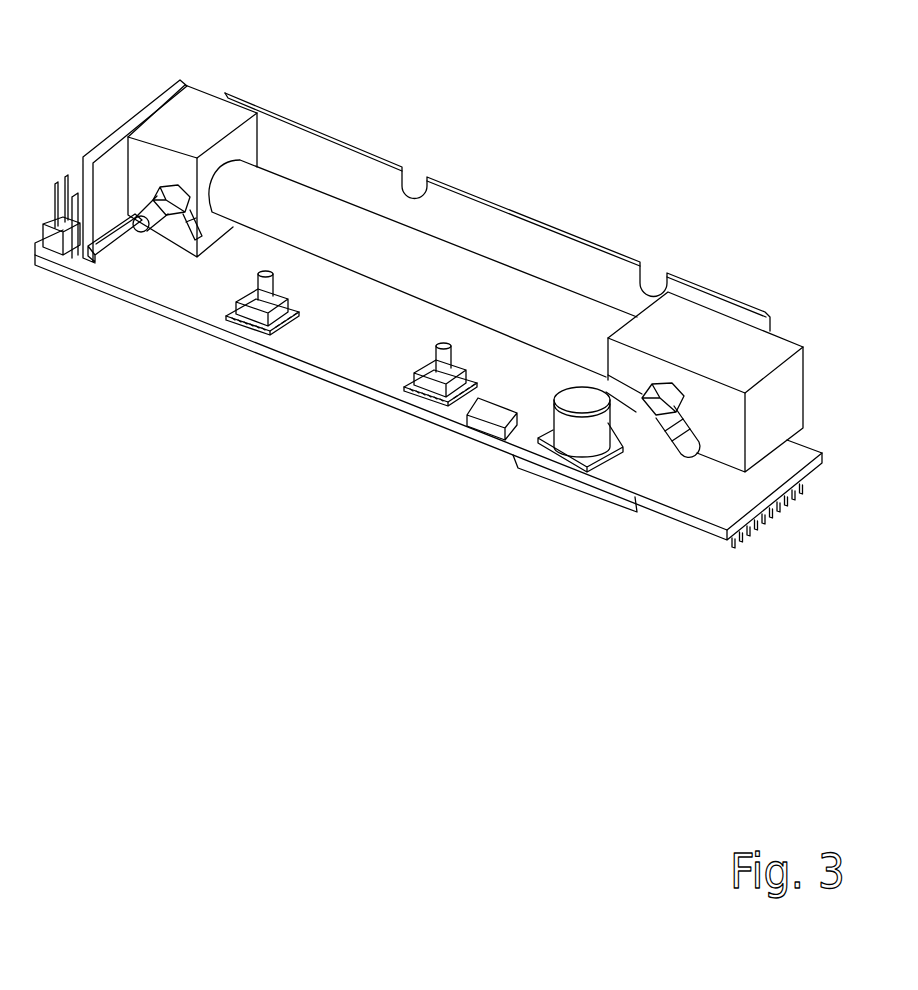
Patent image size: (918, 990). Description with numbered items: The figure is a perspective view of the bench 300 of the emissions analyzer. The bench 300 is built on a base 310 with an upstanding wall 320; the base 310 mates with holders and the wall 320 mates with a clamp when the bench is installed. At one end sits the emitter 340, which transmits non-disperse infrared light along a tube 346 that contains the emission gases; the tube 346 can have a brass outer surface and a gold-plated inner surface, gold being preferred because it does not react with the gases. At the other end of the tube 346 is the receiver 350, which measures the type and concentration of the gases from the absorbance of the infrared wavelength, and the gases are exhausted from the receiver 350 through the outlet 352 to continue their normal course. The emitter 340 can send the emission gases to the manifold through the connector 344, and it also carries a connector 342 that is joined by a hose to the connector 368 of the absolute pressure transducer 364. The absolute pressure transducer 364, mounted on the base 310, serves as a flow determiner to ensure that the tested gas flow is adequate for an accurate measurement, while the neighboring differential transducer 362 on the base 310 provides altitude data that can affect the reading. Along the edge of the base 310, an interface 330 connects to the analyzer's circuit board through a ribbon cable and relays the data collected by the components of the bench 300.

The bench 300 is at (580, 152).
The base 310 is at (340, 347).
The wall 320 is at (482, 217).
The interface 330 is at (767, 520).
The emitter 340 is at (737, 345).
The connector 342 is at (682, 452).
The connector 344 is at (608, 386).
The tube 346 is at (308, 210).
The receiver 350 is at (207, 107).
The outlet 352 is at (182, 237).
The differential transducer 362 is at (253, 317).
The absolute pressure transducer 364 is at (433, 385).
The connector 368 is at (433, 353).